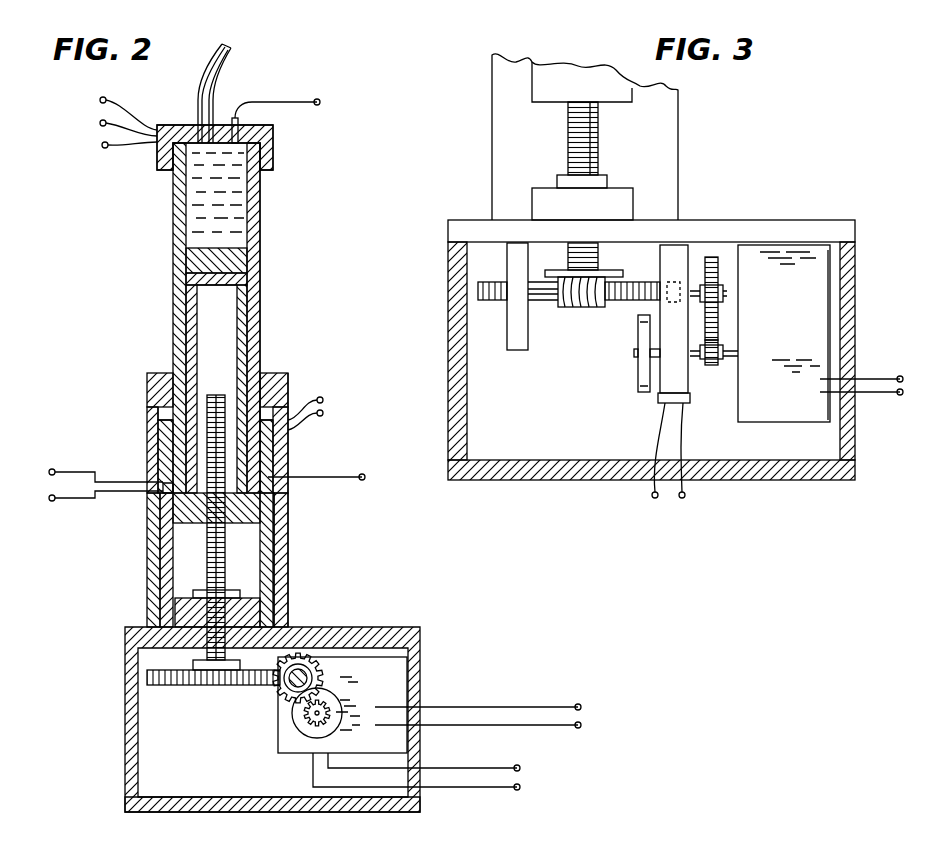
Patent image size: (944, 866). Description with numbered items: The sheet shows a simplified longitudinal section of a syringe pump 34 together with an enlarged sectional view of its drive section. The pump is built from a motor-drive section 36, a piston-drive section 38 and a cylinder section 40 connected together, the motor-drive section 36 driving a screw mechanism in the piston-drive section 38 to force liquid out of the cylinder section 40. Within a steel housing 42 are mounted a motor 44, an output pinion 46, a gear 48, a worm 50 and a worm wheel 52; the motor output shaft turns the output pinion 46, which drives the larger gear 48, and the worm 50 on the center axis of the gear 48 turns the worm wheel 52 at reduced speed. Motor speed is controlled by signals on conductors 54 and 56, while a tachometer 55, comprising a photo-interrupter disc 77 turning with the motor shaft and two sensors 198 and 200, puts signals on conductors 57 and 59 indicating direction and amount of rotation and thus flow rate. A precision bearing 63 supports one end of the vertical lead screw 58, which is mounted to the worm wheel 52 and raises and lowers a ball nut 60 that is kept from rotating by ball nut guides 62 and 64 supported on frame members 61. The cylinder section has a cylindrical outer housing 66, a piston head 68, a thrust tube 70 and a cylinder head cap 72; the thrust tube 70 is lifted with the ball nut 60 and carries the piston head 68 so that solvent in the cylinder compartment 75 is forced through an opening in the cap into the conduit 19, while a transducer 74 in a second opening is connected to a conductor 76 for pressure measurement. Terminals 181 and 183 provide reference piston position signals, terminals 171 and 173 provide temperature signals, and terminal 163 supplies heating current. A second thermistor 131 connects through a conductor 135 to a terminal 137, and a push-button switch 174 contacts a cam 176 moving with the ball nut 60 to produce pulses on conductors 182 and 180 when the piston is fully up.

In FIG. 2, the conduit 19 is at (204, 70).
In FIG. 2, the syringe pump 34 is at (261, 125).
In FIG. 2, the motor-drive section 36 is at (446, 693).
In FIG. 3, the motor-drive section 36 is at (651, 257).
In FIG. 2, the piston-drive section 38 is at (305, 499).
In FIG. 2, the cylinder section 40 is at (308, 249).
In FIG. 2, the steel housing 42 is at (292, 812).
In FIG. 3, the steel housing 42 is at (528, 480).
In FIG. 2, the motor 44 is at (387, 665).
In FIG. 3, the motor 44 is at (812, 296).
In FIG. 2, the output pinion 46 is at (338, 690).
In FIG. 3, the output pinion 46 is at (720, 352).
In FIG. 2, the gear 48 is at (312, 655).
In FIG. 3, the gear 48 is at (712, 258).
In FIG. 2, the worm 50 is at (284, 706).
In FIG. 3, the worm 50 is at (590, 307).
In FIG. 2, the worm wheel 52 is at (224, 687).
In FIG. 3, the worm wheel 52 is at (620, 272).
In FIG. 2, the conductor 54 is at (535, 707).
In FIG. 3, the conductor 54 is at (873, 379).
In FIG. 2, the tachometer 55 is at (357, 705).
In FIG. 3, the tachometer 55 is at (638, 406).
In FIG. 2, the conductor 56 is at (545, 725).
In FIG. 3, the conductor 56 is at (874, 392).
In FIG. 2, the conductor 57 is at (470, 768).
In FIG. 3, the conductor 57 is at (652, 498).
In FIG. 2, the lead screw 58 is at (230, 448).
In FIG. 2, the conductor 59 is at (472, 787).
In FIG. 3, the conductor 59 is at (686, 497).
In FIG. 2, the ball nut 60 is at (288, 540).
In FIG. 2, the frame member 61 is at (152, 556).
In FIG. 2, the ball nut guide 62 is at (163, 425).
In FIG. 2, the precision bearing 63 is at (245, 615).
In FIG. 2, the ball nut guide 64 is at (275, 462).
In FIG. 2, the cylindrical outer housing 66 is at (255, 240).
In FIG. 2, the piston head 68 is at (237, 264).
In FIG. 2, the thrust tube 70 is at (248, 292).
In FIG. 2, the cylinder head cap 72 is at (273, 150).
In FIG. 2, the transducer 74 is at (238, 122).
In FIG. 2, the cylinder compartment 75 is at (235, 207).
In FIG. 2, the conductor 76 is at (288, 102).
In FIG. 3, the photo-interrupter disc 77 is at (638, 389).
In FIG. 2, the second thermistor 131 is at (288, 522).
In FIG. 2, the conductor 135 is at (345, 477).
In FIG. 2, the terminal 137 is at (365, 477).
In FIG. 2, the terminal 163 is at (100, 98).
In FIG. 2, the terminal 171 is at (100, 123).
In FIG. 2, the terminal 173 is at (102, 145).
In FIG. 2, the push-button switch 174 is at (168, 482).
In FIG. 2, the cam 176 is at (175, 505).
In FIG. 2, the conductor 180 is at (99, 493).
In FIG. 2, the terminal 181 is at (52, 501).
In FIG. 2, the conductor 182 is at (96, 474).
In FIG. 2, the terminal 183 is at (52, 469).
In FIG. 3, the sensor 198 is at (686, 404).
In FIG. 3, the sensor 200 is at (688, 393).